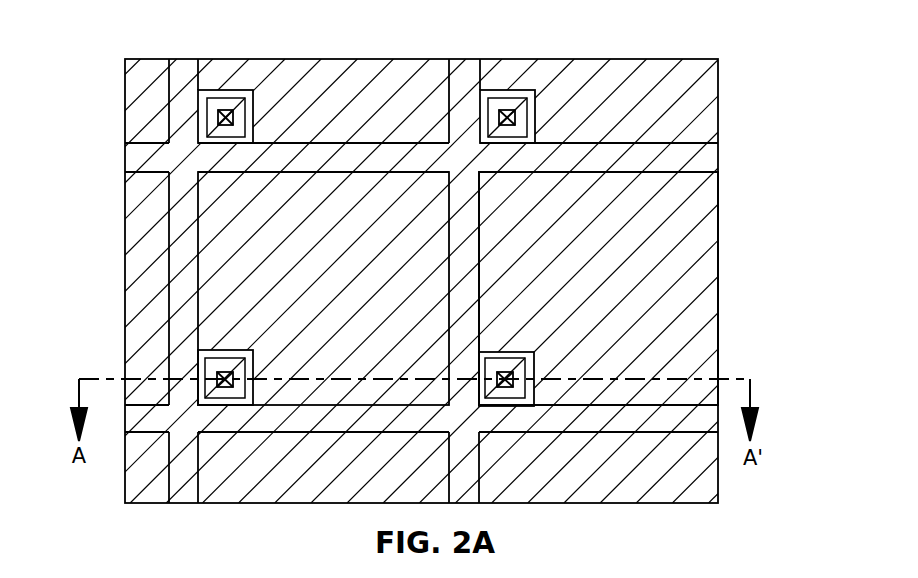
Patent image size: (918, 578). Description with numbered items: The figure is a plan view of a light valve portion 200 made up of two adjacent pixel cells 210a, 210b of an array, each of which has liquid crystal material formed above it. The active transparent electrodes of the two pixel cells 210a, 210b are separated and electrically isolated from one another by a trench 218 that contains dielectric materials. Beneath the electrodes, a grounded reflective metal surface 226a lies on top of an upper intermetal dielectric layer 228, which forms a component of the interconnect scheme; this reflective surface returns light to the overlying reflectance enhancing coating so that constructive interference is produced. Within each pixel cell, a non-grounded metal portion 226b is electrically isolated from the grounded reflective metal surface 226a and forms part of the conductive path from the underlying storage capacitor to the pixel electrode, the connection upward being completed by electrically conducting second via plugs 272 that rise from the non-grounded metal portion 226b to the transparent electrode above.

The light valve portion 200 is at (110, 133).
The trench 218 is at (708, 158).
The grounded reflective metal surface 226a is at (705, 203).
The non-grounded metal portion 226b is at (508, 363).
The pixel cell 210a is at (380, 242).
The pixel cell 210b is at (676, 274).
The upper intermetal dielectric layer 228 is at (510, 355).
The second via plugs 272 is at (522, 377).